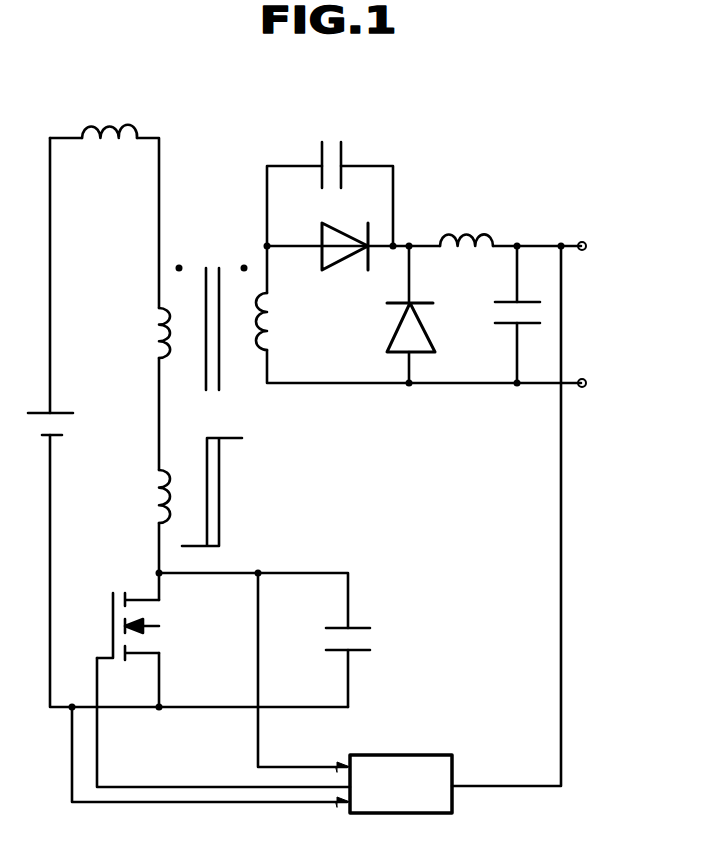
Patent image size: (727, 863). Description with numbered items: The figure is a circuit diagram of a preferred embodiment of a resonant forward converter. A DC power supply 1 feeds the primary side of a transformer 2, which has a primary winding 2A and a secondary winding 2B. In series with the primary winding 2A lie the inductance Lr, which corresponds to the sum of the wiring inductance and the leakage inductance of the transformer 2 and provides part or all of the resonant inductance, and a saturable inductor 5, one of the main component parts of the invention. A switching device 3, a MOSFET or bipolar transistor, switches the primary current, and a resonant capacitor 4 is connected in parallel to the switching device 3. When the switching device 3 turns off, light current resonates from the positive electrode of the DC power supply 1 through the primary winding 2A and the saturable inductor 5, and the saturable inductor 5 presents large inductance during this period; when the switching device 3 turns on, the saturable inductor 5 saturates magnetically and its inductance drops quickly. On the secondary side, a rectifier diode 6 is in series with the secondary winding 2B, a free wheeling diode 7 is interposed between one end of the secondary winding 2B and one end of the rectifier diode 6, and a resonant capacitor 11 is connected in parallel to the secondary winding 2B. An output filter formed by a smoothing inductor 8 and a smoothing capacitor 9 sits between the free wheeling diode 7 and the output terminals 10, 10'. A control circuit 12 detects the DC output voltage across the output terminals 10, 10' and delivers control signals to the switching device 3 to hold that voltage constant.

The DC power supply 1 is at (62, 411).
The transformer 2 is at (211, 287).
The primary winding 2A is at (145, 333).
The secondary winding 2B is at (279, 321).
The switching device 3 is at (165, 629).
The resonant capacitor 4 is at (360, 640).
The saturable inductor 5 is at (222, 462).
The rectifier diode 6 is at (345, 231).
The free wheeling diode 7 is at (397, 330).
The smoothing inductor 8 is at (468, 222).
The smoothing capacitor 9 is at (503, 330).
The output terminal 10 is at (607, 205).
The output terminal 10' is at (618, 346).
The resonant capacitor 11 is at (330, 140).
The control circuit 12 is at (443, 773).
The inductance Lr is at (115, 113).